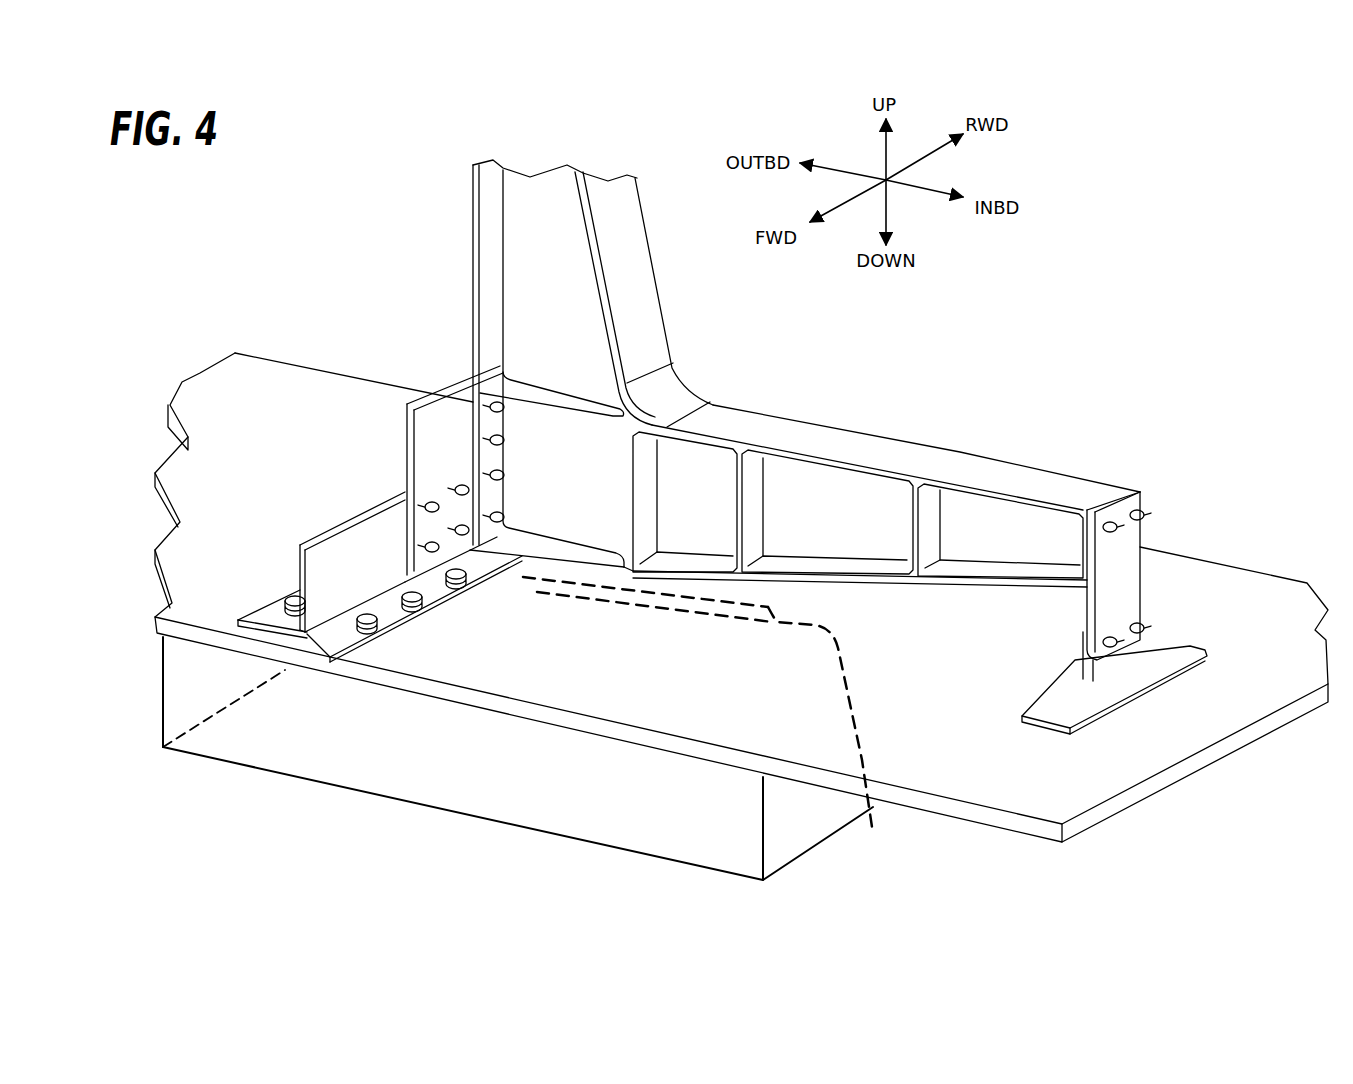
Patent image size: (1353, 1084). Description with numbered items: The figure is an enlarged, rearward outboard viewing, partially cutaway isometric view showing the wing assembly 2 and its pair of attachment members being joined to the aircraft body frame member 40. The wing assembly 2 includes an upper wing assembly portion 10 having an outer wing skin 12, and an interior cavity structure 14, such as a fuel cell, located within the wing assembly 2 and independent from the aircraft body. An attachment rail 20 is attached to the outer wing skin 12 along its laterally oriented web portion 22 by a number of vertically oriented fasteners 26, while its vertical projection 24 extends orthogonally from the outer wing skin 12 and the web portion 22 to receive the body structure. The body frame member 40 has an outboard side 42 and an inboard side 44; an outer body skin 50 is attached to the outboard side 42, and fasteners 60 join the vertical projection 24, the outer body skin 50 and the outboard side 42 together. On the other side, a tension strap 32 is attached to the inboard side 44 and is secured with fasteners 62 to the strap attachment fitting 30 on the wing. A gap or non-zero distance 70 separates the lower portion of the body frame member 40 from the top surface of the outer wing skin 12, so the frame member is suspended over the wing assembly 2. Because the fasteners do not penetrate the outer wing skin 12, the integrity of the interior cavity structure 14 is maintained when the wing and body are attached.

The wing assembly 2 is at (176, 769).
The upper wing assembly portion 10 is at (273, 208).
The outer wing skin 12 is at (242, 378).
The interior cavity structure 14 is at (518, 758).
The attachment rail 20 is at (305, 548).
The web portion 22 is at (268, 618).
The vertical projection 24 is at (353, 520).
The vertically oriented fasteners 26 is at (413, 604).
The strap attachment fitting 30 is at (1167, 648).
The tension strap 32 is at (1118, 562).
The aircraft body frame member 40 is at (758, 422).
The outboard side 42 is at (473, 312).
The inboard side 44 is at (1107, 487).
The outer body skin 50 is at (450, 413).
The fasteners 60 is at (470, 492).
The fasteners 62 is at (1112, 648).
The gap or non-zero distance 70 is at (705, 718).